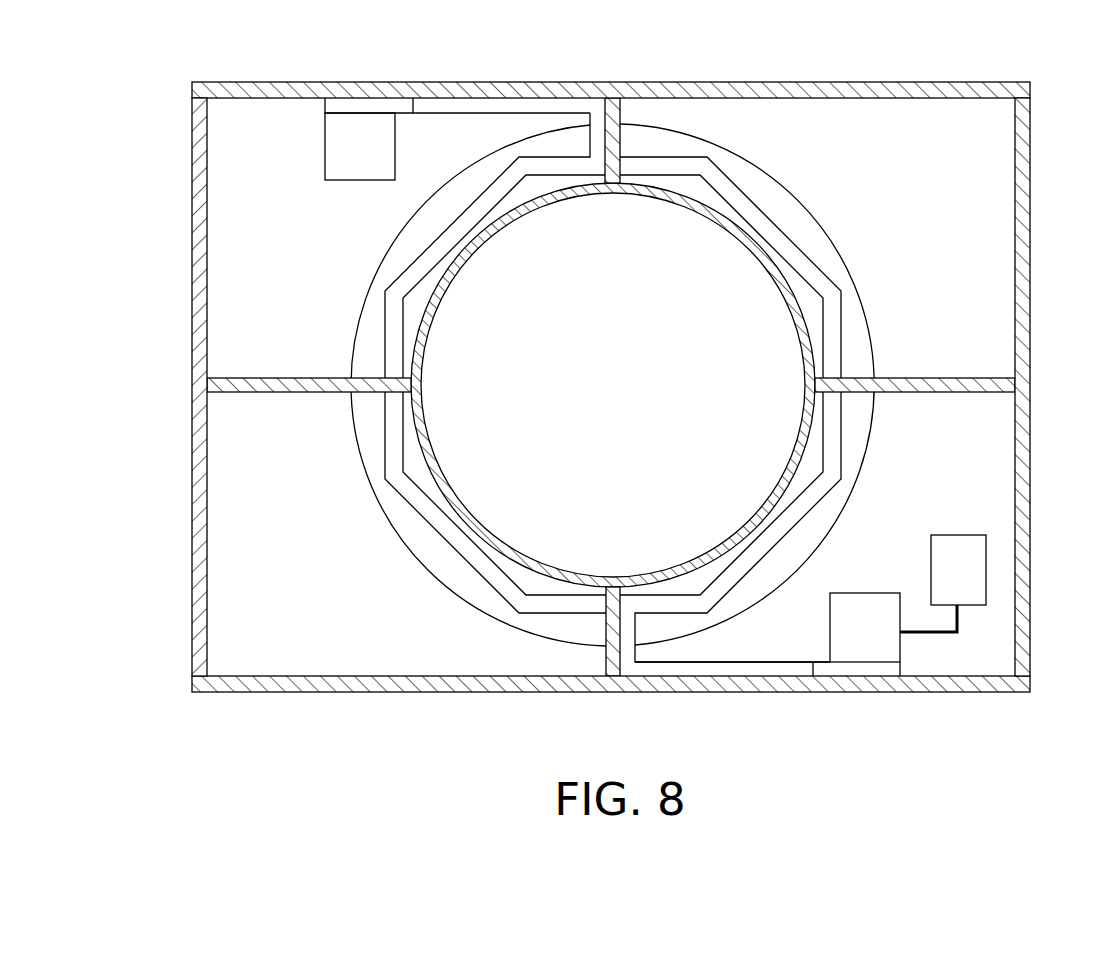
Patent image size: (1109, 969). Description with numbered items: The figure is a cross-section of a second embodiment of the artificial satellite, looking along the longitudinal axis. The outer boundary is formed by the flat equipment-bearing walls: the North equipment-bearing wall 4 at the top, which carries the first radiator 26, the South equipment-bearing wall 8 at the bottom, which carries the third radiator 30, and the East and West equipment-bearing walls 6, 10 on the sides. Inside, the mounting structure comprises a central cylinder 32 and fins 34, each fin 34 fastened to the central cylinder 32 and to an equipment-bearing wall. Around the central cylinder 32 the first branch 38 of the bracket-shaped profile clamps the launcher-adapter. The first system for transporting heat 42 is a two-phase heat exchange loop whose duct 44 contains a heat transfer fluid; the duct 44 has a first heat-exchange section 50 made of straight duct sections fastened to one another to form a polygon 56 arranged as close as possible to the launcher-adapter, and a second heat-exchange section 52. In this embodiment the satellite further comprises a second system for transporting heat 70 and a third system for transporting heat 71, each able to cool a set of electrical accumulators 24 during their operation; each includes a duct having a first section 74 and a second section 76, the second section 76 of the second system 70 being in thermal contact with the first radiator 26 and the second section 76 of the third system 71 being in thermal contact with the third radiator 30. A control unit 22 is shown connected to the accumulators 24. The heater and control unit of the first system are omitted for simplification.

The equipment-bearing wall of the North surface 4 is at (611, 58).
The first radiator 26 is at (767, 81).
The equipment-bearing wall of the East surface 6 is at (1030, 263).
The equipment-bearing wall of the South surface 8 is at (611, 720).
The third radiator 30 is at (440, 692).
The equipment-bearing wall of the West surface 10 is at (192, 538).
The control unit 22 is at (963, 533).
The ensemble of electrical accumulators 24 is at (347, 181).
The central cylinder 32 is at (484, 522).
The fins 34 is at (952, 393).
The first branch 38 is at (872, 328).
The first system for transporting heat 42 is at (566, 99).
The duct 44 is at (770, 233).
The first section of a heat-exchange duct 50 is at (613, 385).
The polygon 56 is at (557, 177).
The second section of a heat-exchange duct 52 is at (424, 103).
The second system for transporting heat 70 is at (595, 389).
The third system for transporting heat 71 is at (882, 677).
The first section 74 is at (355, 108).
The second section 76 is at (399, 98).